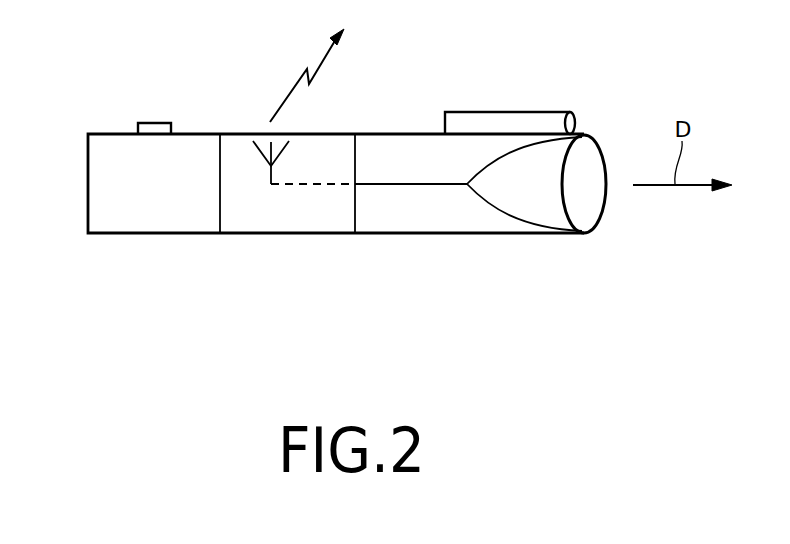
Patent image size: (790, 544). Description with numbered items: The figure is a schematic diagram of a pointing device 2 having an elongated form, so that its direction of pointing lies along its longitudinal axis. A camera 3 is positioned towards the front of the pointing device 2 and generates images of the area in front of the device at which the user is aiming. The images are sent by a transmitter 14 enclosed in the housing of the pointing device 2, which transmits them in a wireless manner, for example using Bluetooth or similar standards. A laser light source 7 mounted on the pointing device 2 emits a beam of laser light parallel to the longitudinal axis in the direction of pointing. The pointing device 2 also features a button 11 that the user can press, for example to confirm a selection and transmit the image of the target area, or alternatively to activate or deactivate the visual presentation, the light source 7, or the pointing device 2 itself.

The pointing device 2 is at (370, 133).
The camera 3 is at (553, 217).
The laser light source 7 is at (502, 128).
The button 11 is at (153, 125).
The transmitter 14 is at (310, 217).